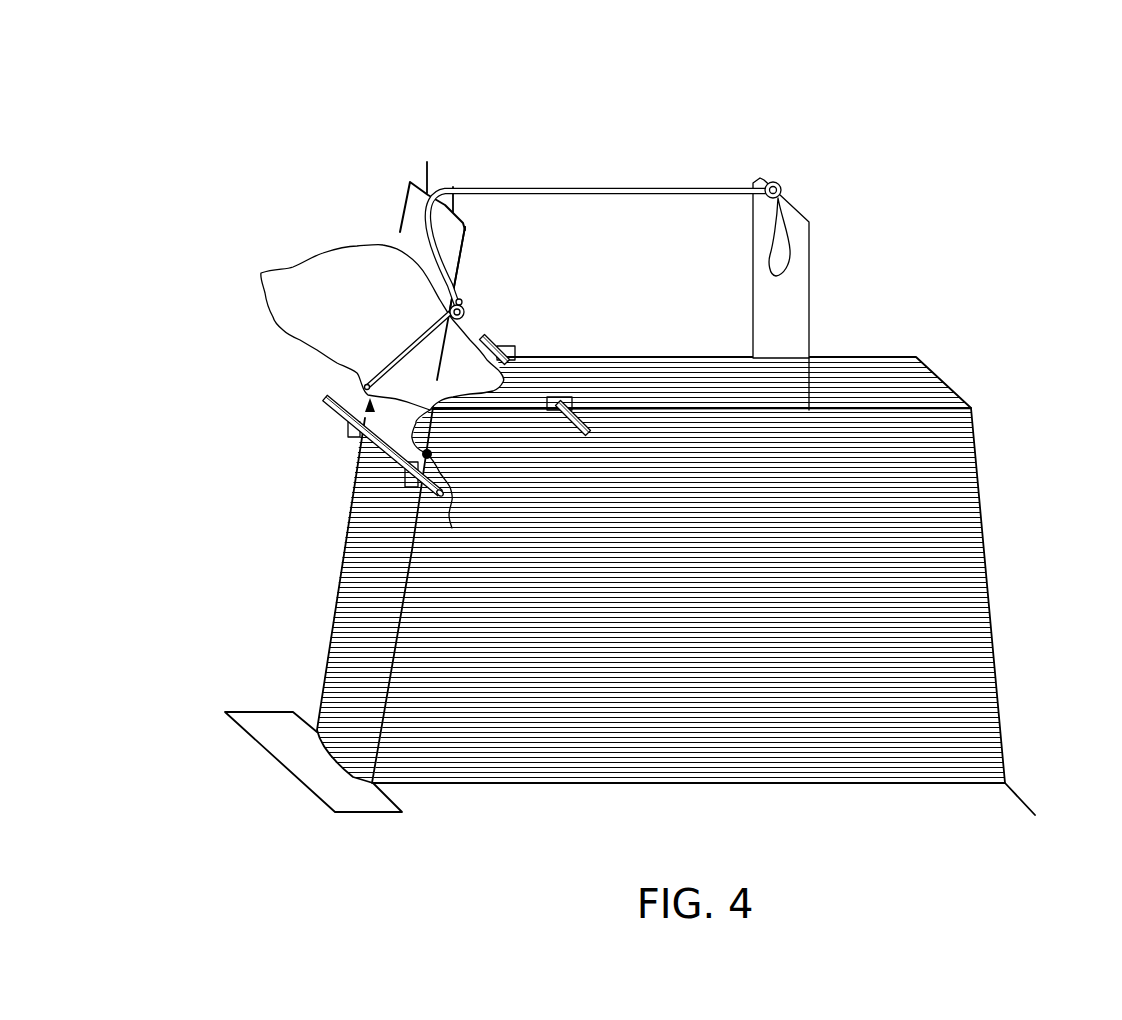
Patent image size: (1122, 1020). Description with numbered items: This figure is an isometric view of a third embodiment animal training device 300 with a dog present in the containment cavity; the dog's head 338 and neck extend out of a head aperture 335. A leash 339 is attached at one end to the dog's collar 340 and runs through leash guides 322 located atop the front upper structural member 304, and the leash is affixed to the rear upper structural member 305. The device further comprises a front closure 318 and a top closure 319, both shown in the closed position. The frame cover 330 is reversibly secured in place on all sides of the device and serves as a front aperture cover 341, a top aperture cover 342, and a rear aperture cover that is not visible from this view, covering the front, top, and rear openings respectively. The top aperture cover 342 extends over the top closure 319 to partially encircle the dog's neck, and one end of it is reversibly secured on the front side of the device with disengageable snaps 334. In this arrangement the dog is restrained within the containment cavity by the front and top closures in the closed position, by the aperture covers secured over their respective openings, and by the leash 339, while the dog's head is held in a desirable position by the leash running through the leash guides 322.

The animal training device 300 is at (608, 80).
The front upper structural member 304 is at (465, 247).
The rear upper structural member 305 is at (809, 302).
The front closure 318 is at (357, 423).
The top closure 319 is at (495, 337).
The leash guides 322 is at (428, 178).
The frame cover 330 is at (959, 737).
The disengageable snaps 334 is at (370, 412).
The head aperture 335 is at (457, 367).
The dog's head 338 is at (307, 262).
The leash 339 is at (660, 187).
The dog's collar 340 is at (362, 383).
The front aperture cover 341 is at (367, 562).
The top aperture cover 342 is at (662, 377).